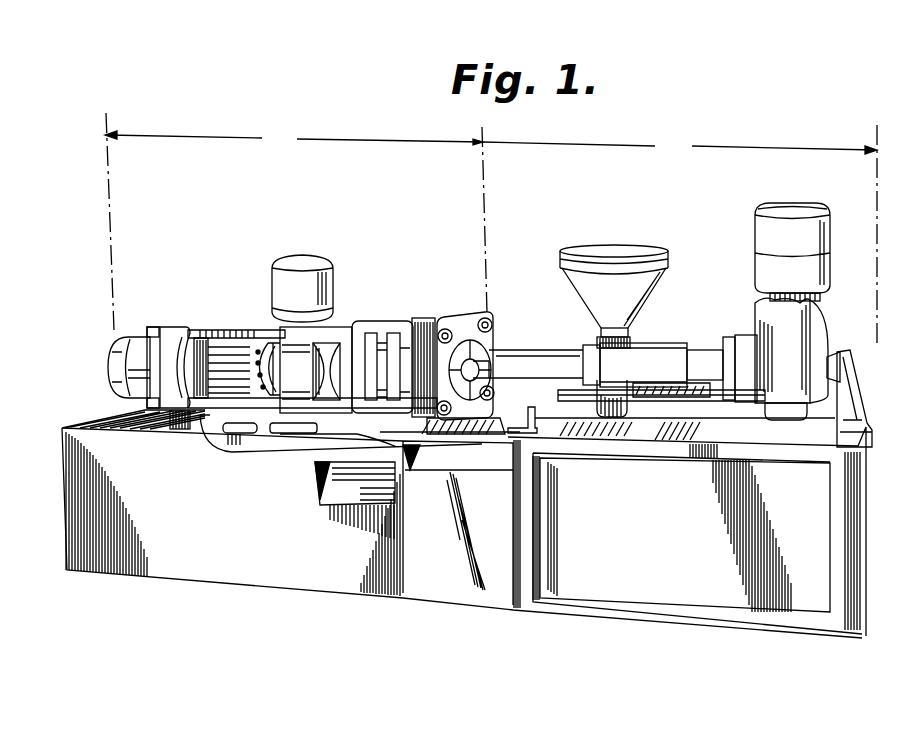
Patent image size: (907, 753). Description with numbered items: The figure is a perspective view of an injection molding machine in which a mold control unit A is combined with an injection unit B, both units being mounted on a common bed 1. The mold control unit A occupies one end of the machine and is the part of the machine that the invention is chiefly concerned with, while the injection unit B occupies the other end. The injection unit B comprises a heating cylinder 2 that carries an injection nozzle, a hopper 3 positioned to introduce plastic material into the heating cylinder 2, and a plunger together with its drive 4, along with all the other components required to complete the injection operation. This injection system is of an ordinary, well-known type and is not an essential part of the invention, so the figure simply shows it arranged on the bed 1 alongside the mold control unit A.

The bed 1 is at (358, 580).
The heating cylinder 2 is at (545, 363).
The hopper 3 is at (633, 295).
The plunger and its drive 4 is at (815, 245).
The mold control unit A is at (312, 282).
The injection unit B is at (680, 292).